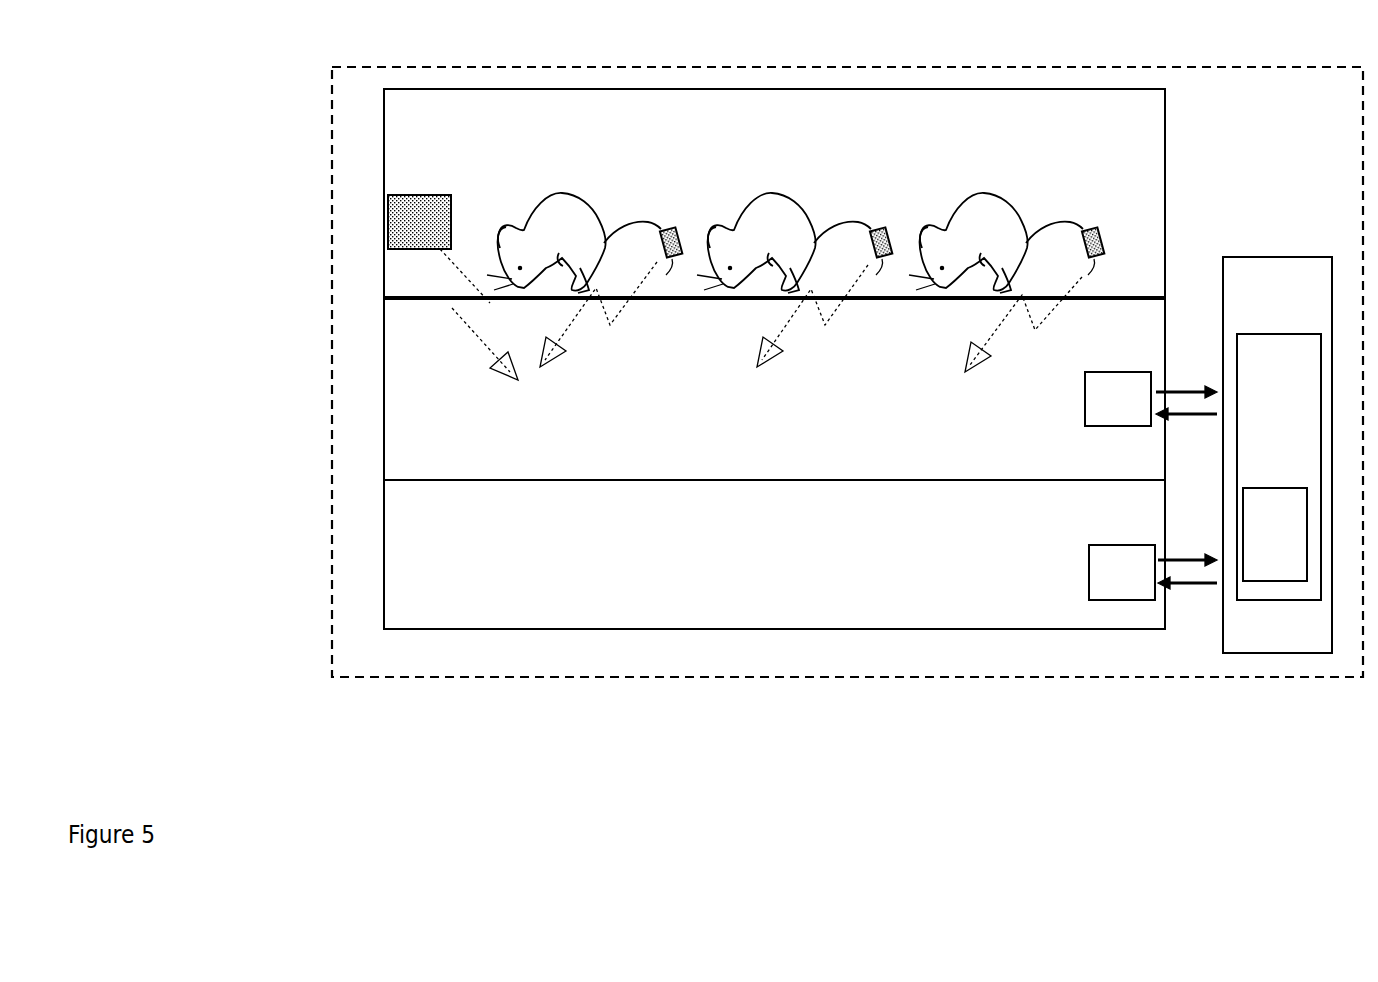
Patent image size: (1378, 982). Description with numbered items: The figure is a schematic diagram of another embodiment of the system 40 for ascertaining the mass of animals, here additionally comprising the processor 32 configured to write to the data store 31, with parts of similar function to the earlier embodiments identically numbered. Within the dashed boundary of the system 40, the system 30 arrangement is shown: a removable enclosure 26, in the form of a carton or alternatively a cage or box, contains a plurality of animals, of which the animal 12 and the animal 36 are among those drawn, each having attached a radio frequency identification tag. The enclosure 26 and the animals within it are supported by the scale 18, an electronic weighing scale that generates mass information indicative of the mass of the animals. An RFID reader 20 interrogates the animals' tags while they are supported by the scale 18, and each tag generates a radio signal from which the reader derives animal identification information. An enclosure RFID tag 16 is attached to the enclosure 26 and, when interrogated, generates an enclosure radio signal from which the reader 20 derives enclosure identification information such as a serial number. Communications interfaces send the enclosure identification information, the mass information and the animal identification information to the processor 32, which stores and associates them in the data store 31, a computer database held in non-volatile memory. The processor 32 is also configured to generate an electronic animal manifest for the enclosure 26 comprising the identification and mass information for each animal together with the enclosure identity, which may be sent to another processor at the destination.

The animal 12 is at (583, 231).
The enclosure RFID tag 16 is at (417, 222).
The scale 18 is at (428, 519).
The RFID reader 20 is at (431, 344).
The removable enclosure 26 is at (518, 90).
The system 30 is at (344, 596).
The data store 31 is at (1276, 521).
The processor 32 is at (1306, 299).
The animal 36 is at (1005, 231).
The system 40 is at (323, 159).